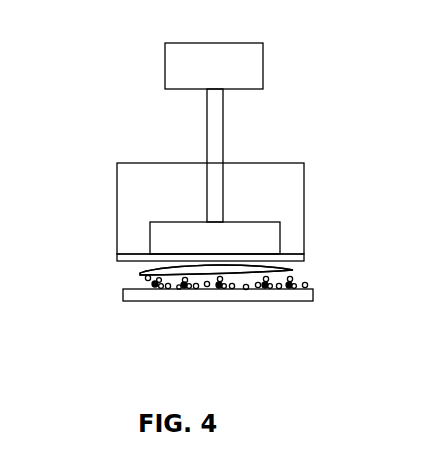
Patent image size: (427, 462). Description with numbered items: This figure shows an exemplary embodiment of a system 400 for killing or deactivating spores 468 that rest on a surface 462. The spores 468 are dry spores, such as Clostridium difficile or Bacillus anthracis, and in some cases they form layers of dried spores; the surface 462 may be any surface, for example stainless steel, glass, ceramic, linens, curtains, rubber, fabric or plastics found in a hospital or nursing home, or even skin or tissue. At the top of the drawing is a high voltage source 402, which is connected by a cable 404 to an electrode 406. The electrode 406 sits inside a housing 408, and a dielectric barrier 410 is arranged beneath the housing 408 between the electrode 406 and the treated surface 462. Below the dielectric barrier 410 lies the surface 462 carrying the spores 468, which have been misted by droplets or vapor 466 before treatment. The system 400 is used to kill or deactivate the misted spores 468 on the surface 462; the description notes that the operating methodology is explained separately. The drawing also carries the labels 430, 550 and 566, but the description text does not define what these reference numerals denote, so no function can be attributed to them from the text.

The system 400 is at (337, 70).
The high voltage source 402 is at (263, 43).
The cable 404 is at (223, 128).
The electrode 406 is at (280, 232).
The housing 408 is at (304, 190).
The dielectric barrier 410 is at (118, 258).
The semiconductor die 430 is at (143, 273).
The warped die layer 550 is at (282, 264).
The surface 462 is at (252, 300).
The droplets or vapor 466 is at (146, 280).
The spores 468 is at (183, 286).
The interconnect structures 566 is at (355, 296).